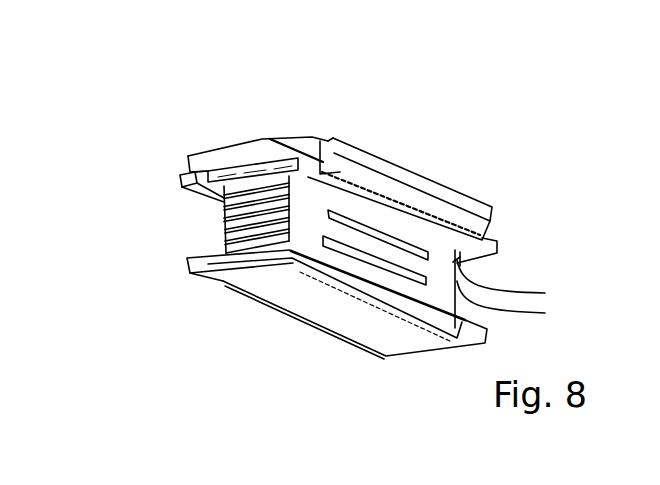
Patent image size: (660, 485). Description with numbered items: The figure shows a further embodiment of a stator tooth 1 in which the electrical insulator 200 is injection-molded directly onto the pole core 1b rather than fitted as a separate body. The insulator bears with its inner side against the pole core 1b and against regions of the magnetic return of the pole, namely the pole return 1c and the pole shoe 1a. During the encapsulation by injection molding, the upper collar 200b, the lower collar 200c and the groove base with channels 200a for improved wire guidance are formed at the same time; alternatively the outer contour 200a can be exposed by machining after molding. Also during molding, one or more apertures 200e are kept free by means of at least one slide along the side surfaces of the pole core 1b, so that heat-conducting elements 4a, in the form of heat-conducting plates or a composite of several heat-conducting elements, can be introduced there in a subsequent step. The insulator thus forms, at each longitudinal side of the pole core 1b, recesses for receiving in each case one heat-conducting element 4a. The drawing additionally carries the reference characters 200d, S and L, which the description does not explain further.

The stator tooth 1 is at (228, 110).
The pole shoe 1a is at (287, 143).
The pole core 1b is at (457, 273).
The pole return 1c is at (294, 300).
The heat-conducting element 4a is at (363, 227).
The electrical insulator 200 is at (257, 203).
The channels 200a is at (224, 238).
The upper collar 200b is at (176, 180).
The lower collar 200c is at (205, 260).
The connecting portion 200d is at (340, 138).
The apertures 200e is at (523, 292).
The screw S is at (223, 160).
The longitudinal direction L is at (447, 200).